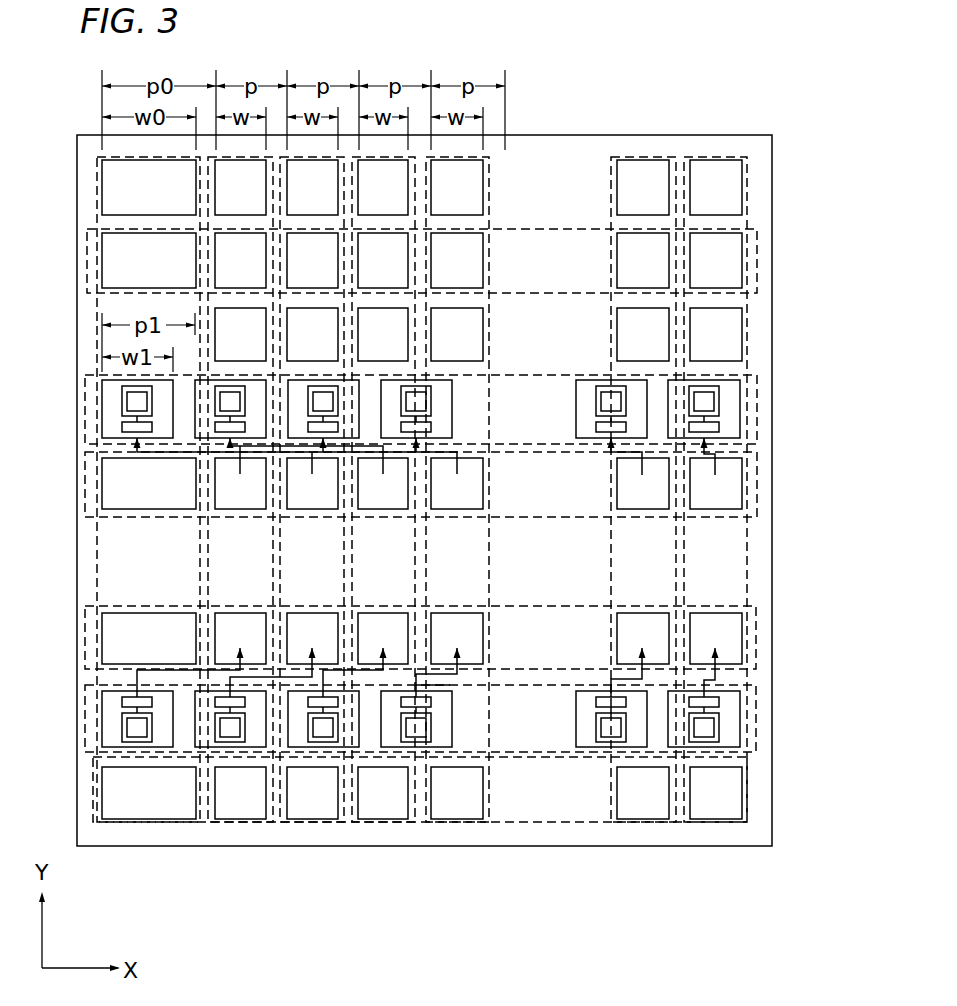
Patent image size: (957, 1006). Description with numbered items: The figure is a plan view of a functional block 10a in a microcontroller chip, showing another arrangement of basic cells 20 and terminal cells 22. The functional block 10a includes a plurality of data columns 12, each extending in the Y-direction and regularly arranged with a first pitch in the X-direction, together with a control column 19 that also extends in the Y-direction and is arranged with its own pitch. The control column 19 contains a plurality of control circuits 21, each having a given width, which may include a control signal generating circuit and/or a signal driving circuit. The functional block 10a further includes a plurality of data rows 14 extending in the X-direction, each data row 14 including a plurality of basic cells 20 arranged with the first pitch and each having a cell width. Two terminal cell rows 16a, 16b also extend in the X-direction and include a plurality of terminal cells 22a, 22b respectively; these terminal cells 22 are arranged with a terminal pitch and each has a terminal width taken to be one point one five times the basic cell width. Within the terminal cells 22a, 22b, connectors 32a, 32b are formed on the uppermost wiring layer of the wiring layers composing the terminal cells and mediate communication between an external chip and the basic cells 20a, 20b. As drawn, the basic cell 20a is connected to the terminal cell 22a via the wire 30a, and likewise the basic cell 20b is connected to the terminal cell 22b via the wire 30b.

The functional block 10a is at (773, 218).
The data column 12 is at (492, 178).
The data row 14 is at (578, 228).
The control column 19 is at (97, 197).
The basic cell 20 is at (483, 250).
The basic cell 20a is at (478, 497).
The basic cell 20b is at (470, 667).
The control circuit 21 is at (102, 263).
The terminal cell 22 is at (742, 415).
The terminal cell 22a is at (452, 407).
The terminal cell 22b is at (437, 748).
The terminal cell row 16a is at (573, 375).
The terminal cell row 16b is at (555, 757).
The wire 30a is at (458, 468).
The wire 30b is at (450, 680).
The connector 32a is at (417, 390).
The connector 32b is at (407, 733).